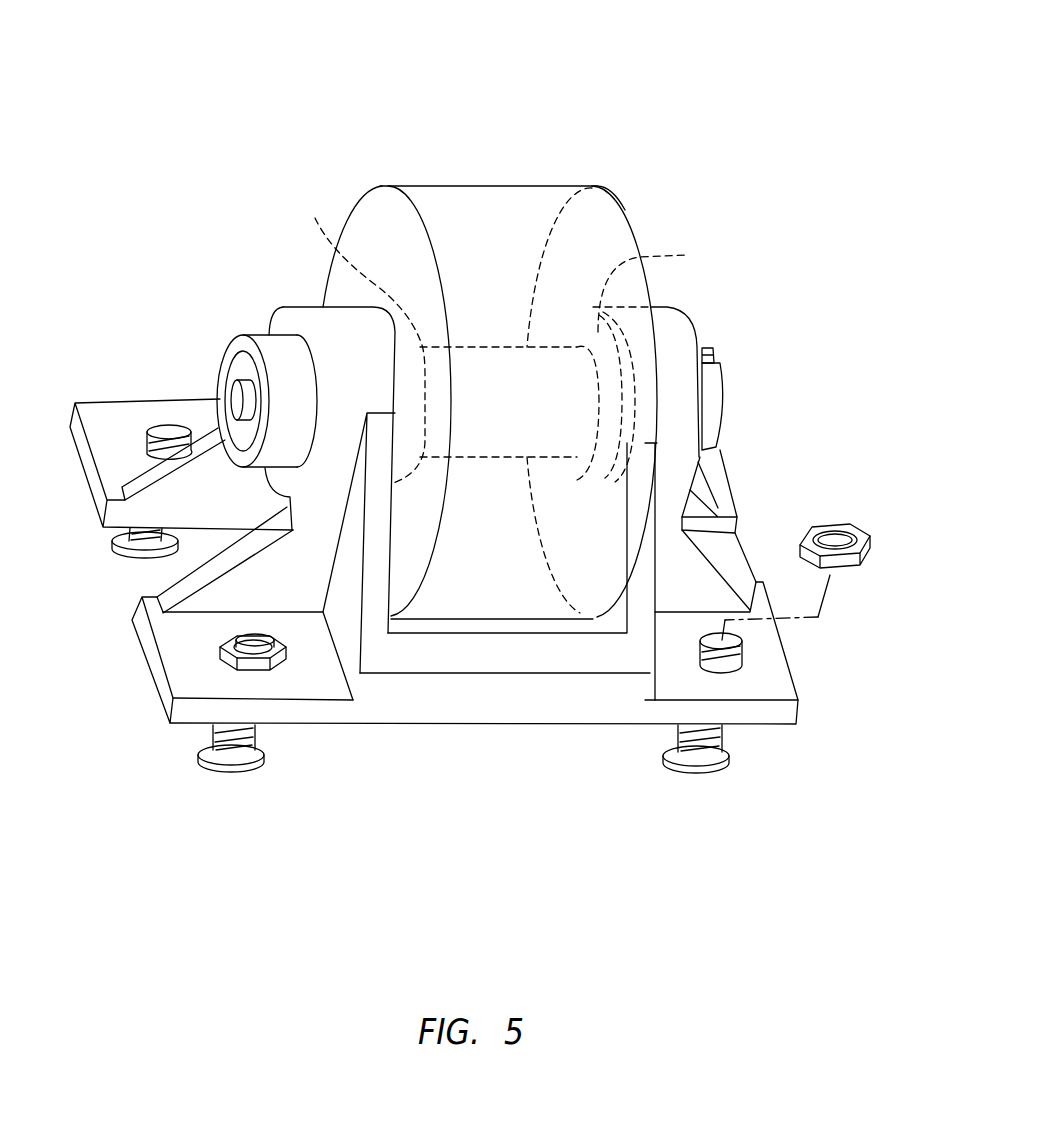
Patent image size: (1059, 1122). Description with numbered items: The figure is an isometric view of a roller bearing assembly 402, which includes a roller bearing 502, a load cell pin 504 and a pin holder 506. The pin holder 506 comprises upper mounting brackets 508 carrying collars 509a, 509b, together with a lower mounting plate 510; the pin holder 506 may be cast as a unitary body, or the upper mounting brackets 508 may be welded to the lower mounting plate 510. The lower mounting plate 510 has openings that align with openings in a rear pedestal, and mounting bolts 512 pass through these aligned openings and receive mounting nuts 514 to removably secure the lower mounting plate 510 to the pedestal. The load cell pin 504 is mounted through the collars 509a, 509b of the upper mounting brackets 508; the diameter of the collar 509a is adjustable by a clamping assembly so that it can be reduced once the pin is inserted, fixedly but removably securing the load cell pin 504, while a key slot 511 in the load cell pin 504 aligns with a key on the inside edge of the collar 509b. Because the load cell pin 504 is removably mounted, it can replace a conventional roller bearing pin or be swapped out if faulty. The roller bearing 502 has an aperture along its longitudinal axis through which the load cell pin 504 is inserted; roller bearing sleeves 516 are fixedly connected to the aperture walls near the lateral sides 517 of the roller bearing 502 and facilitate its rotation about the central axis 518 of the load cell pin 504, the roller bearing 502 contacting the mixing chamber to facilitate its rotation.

The roller bearing assembly 402 is at (630, 45).
The roller bearing 502 is at (490, 185).
The load cell pin 504 is at (226, 310).
The pin holder 506 is at (145, 340).
The upper mounting brackets 508 is at (322, 513).
The collar 509a is at (280, 323).
The collar 509b is at (668, 315).
The lower mounting plate 510 is at (303, 683).
The key slot 511 is at (712, 349).
The mounting bolts 512 is at (130, 558).
The mounting nuts 514 is at (222, 660).
The roller bearing sleeves 516 is at (512, 335).
The lateral sides 517 is at (367, 210).
The central axis 518 is at (498, 457).